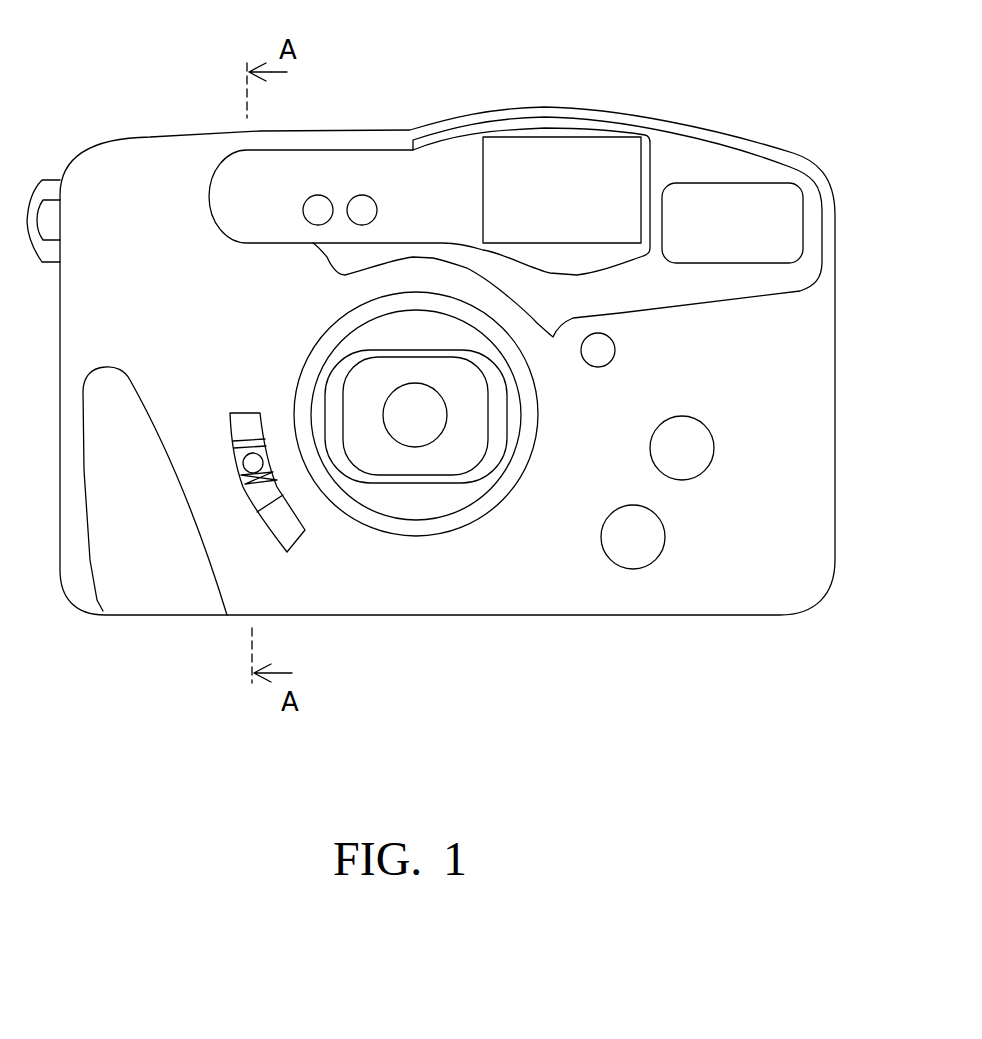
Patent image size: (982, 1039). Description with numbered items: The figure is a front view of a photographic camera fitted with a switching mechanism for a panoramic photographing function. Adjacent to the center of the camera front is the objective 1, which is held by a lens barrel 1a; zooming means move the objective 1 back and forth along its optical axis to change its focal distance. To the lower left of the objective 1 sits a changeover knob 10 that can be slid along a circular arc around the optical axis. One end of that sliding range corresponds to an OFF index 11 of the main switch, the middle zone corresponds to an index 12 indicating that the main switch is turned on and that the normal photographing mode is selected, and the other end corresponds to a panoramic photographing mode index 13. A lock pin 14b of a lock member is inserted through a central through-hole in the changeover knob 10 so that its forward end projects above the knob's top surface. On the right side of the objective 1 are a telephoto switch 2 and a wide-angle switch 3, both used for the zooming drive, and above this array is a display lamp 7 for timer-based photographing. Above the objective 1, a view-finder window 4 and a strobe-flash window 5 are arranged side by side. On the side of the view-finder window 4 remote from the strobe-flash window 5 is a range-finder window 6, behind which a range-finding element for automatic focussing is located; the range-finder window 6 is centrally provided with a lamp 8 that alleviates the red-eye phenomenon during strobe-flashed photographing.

The objective 1 is at (422, 436).
The lens barrel 1a is at (473, 490).
The telephoto switch 2 is at (700, 462).
The wide-angle switch 3 is at (655, 540).
The view-finder window 4 is at (553, 147).
The strobe-flash window 5 is at (740, 193).
The range-finder window 6 is at (315, 163).
The display lamp 7 is at (612, 343).
The lamp 8 is at (362, 197).
The changeover knob 10 is at (280, 488).
The OFF index 11 is at (205, 466).
The ON index 12 is at (210, 512).
The panoramic photographing mode index 13 is at (255, 553).
The lock pin 14b is at (273, 447).